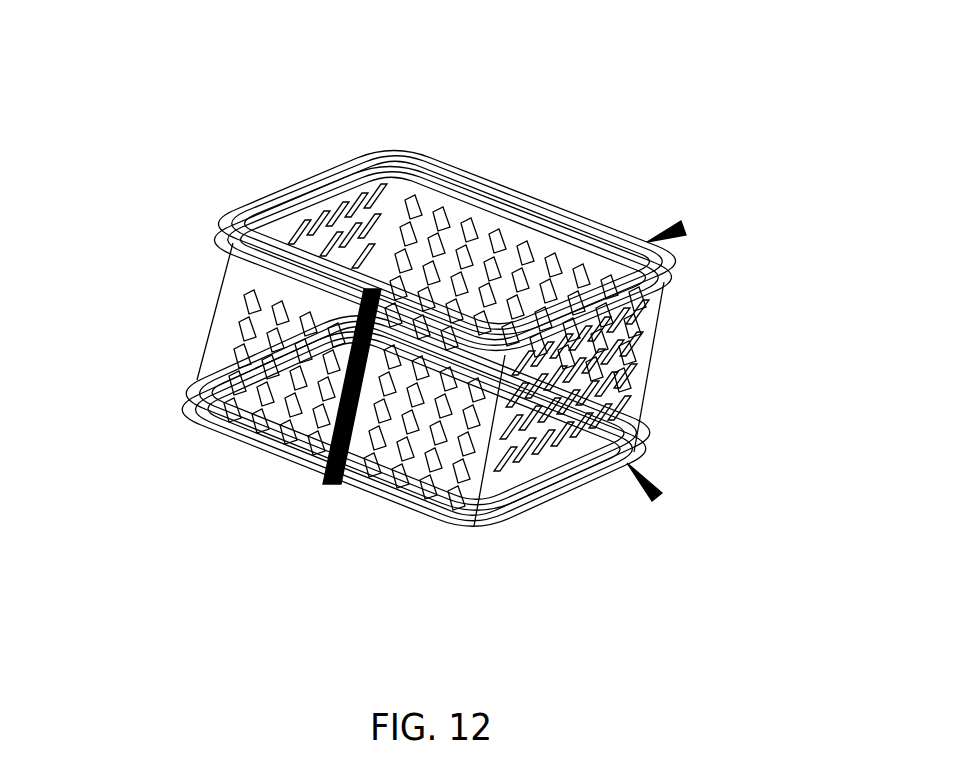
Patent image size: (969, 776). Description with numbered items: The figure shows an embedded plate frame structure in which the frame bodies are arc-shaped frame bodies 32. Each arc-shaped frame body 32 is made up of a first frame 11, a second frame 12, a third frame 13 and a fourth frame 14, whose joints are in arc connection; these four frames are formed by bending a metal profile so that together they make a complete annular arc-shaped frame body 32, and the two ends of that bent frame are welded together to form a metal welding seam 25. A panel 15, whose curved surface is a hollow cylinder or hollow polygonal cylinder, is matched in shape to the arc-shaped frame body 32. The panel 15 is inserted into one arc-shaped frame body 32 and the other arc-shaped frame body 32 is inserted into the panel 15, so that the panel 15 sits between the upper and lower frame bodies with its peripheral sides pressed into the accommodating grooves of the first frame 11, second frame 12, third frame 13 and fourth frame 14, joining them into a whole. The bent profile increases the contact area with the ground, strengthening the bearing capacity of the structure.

The first frame 11 is at (557, 203).
The second frame 12 is at (298, 177).
The third frame 13 is at (647, 312).
The fourth frame 14 is at (253, 210).
The panel 15 is at (210, 347).
The metal welding seam 25 is at (247, 300).
The arc-shaped frame body 32 is at (684, 228).